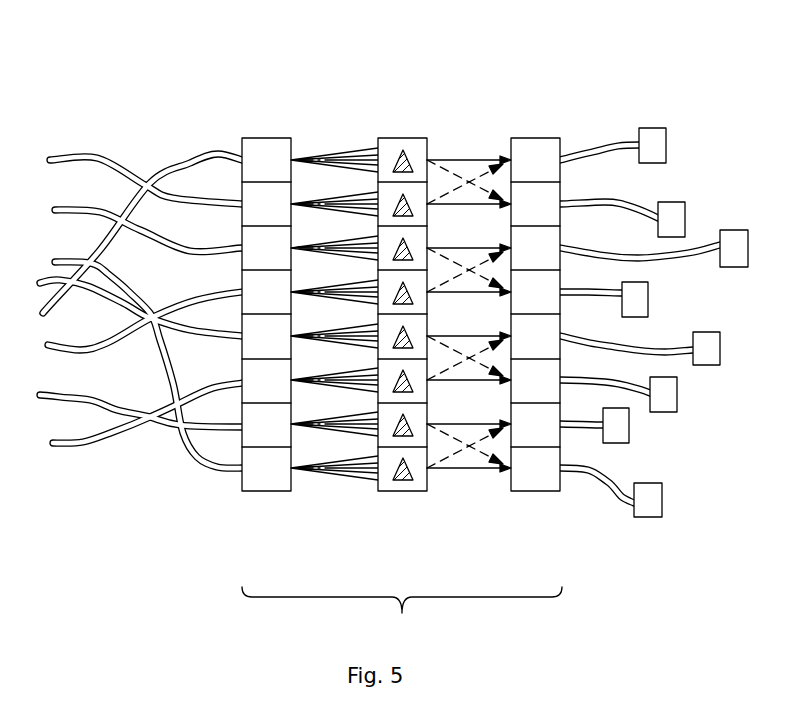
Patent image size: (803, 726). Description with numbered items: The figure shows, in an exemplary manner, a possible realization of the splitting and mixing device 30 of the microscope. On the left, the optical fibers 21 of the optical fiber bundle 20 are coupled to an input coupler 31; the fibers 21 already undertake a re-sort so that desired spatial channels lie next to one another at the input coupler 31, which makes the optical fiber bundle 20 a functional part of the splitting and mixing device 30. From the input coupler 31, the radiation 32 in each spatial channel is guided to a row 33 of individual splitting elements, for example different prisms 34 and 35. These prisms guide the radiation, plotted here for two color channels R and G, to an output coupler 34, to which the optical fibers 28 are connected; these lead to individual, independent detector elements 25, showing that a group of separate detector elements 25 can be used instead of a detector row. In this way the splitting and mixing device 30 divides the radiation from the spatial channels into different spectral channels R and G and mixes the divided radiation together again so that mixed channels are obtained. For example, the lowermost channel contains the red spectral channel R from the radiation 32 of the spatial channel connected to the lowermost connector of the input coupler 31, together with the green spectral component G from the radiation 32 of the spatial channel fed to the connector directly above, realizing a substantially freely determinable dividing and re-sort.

The optical fiber bundle 20 is at (104, 74).
The optical fibers 21 is at (195, 153).
The detector elements 25 is at (652, 147).
The optical fibers 28 is at (597, 148).
The splitting and mixing device 30 is at (402, 613).
The input coupler 31 is at (263, 137).
The radiation 32 is at (346, 482).
The row of individual splitting elements 33 is at (402, 495).
The output coupler 34 is at (403, 154).
The prism 35 is at (403, 193).
The red spectral channel R is at (462, 160).
The green spectral channel G is at (447, 480).